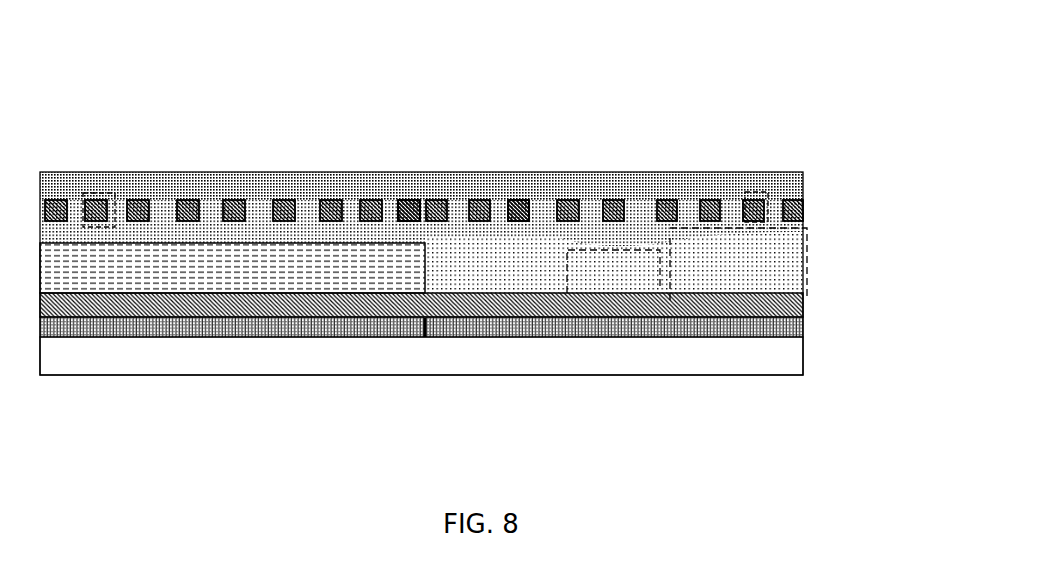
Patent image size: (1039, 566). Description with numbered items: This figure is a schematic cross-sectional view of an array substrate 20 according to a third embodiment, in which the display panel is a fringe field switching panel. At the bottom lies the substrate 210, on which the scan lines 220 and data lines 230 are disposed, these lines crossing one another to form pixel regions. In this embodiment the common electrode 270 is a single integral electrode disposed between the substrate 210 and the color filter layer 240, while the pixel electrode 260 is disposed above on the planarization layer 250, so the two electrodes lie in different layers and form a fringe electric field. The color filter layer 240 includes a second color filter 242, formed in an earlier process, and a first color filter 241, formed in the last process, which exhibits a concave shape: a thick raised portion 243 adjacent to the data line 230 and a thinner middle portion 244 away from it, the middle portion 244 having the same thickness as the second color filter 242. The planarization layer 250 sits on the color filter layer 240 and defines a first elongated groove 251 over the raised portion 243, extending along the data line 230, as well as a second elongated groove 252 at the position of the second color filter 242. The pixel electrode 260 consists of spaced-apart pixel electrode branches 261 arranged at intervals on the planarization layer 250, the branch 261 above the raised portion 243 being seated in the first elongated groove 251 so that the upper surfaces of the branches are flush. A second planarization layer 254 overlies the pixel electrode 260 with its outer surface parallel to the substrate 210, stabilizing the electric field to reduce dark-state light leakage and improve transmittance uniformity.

The array substrate 20 is at (87, 30).
The substrate 210 is at (790, 360).
The scan lines 220 is at (490, 308).
The data lines 230 is at (793, 307).
The color filter layer 240 is at (450, 447).
The first color filter 241 is at (470, 270).
The second color filter 242 is at (380, 277).
The raised portion 243 is at (718, 335).
The middle portion 244 is at (630, 333).
The planarization layer 250 is at (793, 220).
The first elongated groove 251 is at (758, 188).
The second elongated groove 252 is at (88, 197).
The second planarization layer 254 is at (798, 183).
The pixel electrode 260 is at (507, 110).
The pixel electrode branches 261 is at (410, 198).
The common electrode 270 is at (220, 337).